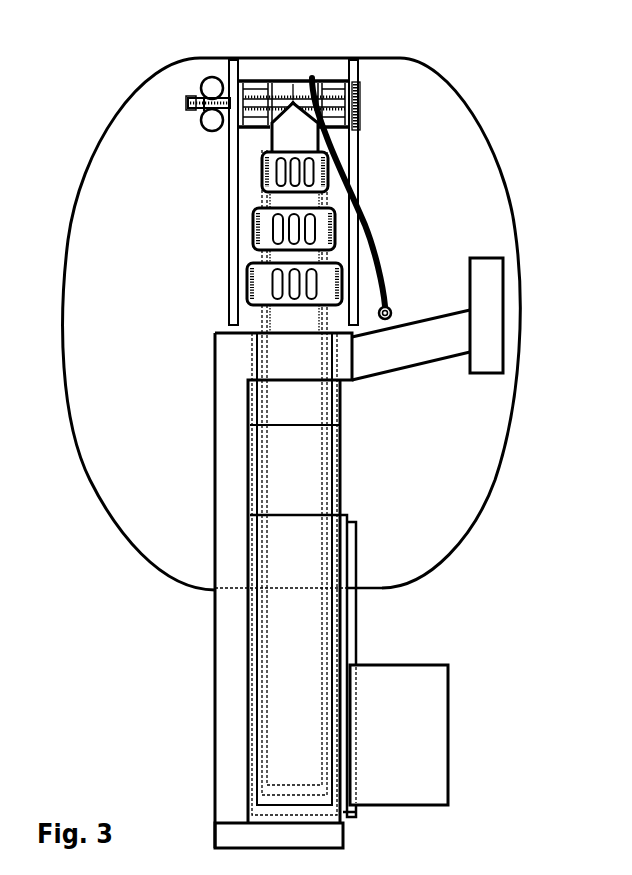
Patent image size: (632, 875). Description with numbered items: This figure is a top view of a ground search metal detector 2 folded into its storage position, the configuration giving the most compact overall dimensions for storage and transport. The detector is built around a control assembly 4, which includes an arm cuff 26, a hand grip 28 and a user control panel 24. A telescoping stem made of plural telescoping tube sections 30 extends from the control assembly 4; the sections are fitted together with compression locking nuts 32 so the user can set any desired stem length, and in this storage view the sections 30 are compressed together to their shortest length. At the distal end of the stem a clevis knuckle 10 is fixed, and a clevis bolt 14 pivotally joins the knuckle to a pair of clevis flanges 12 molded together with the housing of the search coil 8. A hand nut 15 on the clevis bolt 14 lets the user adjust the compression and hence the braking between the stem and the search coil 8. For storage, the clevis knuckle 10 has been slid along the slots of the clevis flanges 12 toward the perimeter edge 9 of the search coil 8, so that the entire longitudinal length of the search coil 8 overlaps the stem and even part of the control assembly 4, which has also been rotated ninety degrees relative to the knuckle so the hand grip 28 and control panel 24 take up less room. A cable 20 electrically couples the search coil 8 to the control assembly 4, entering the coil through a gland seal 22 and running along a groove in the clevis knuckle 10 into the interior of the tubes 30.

The ground search metal detector 2 is at (556, 570).
The control assembly 4 is at (215, 706).
The search coil 8 is at (246, 310).
The perimeter edge 9 is at (324, 58).
The clevis knuckle 10 is at (250, 78).
The clevis flanges 12 is at (361, 71).
The clevis bolt 14 is at (292, 96).
The hand nut 15 is at (205, 128).
The cable 20 is at (372, 240).
The gland seal 22 is at (391, 312).
The user control panel 24 is at (504, 322).
The arm cuff 26 is at (446, 665).
The hand grip 28 is at (410, 367).
The telescoping tube sections 30 is at (268, 136).
The compression locking nuts 32 is at (255, 295).